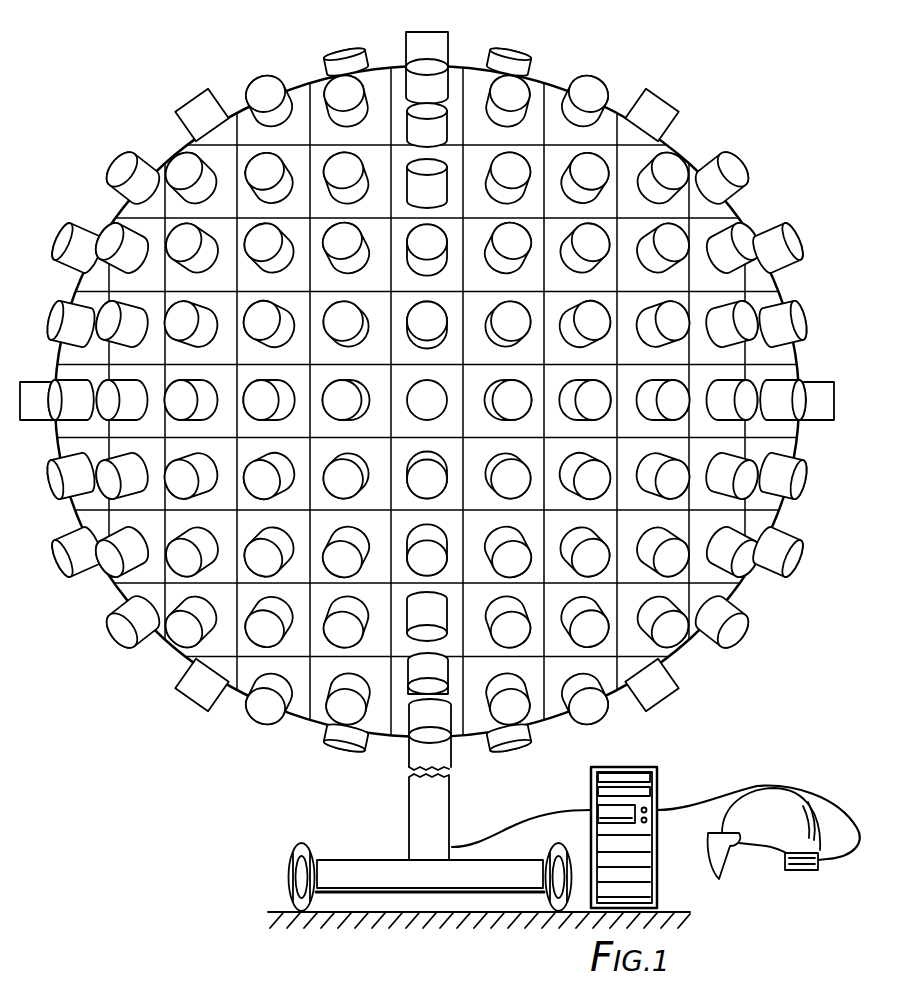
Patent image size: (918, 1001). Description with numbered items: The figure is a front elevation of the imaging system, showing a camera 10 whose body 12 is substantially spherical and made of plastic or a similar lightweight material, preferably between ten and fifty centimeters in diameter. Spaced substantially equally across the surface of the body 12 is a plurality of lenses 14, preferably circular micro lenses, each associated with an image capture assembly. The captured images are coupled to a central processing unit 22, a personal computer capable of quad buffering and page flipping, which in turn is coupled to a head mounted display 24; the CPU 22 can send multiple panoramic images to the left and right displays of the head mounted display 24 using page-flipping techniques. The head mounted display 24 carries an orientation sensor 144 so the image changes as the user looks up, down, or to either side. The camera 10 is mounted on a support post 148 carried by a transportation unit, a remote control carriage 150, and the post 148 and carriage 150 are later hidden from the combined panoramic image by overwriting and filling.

The camera 10 is at (622, 70).
The body 12 is at (638, 113).
The lenses 14 is at (570, 100).
The central processing unit 22 is at (642, 767).
The head mounted display 24 is at (785, 770).
The orientation sensor 144 is at (810, 869).
The support post 148 is at (418, 752).
The remote control carriage 150 is at (372, 873).